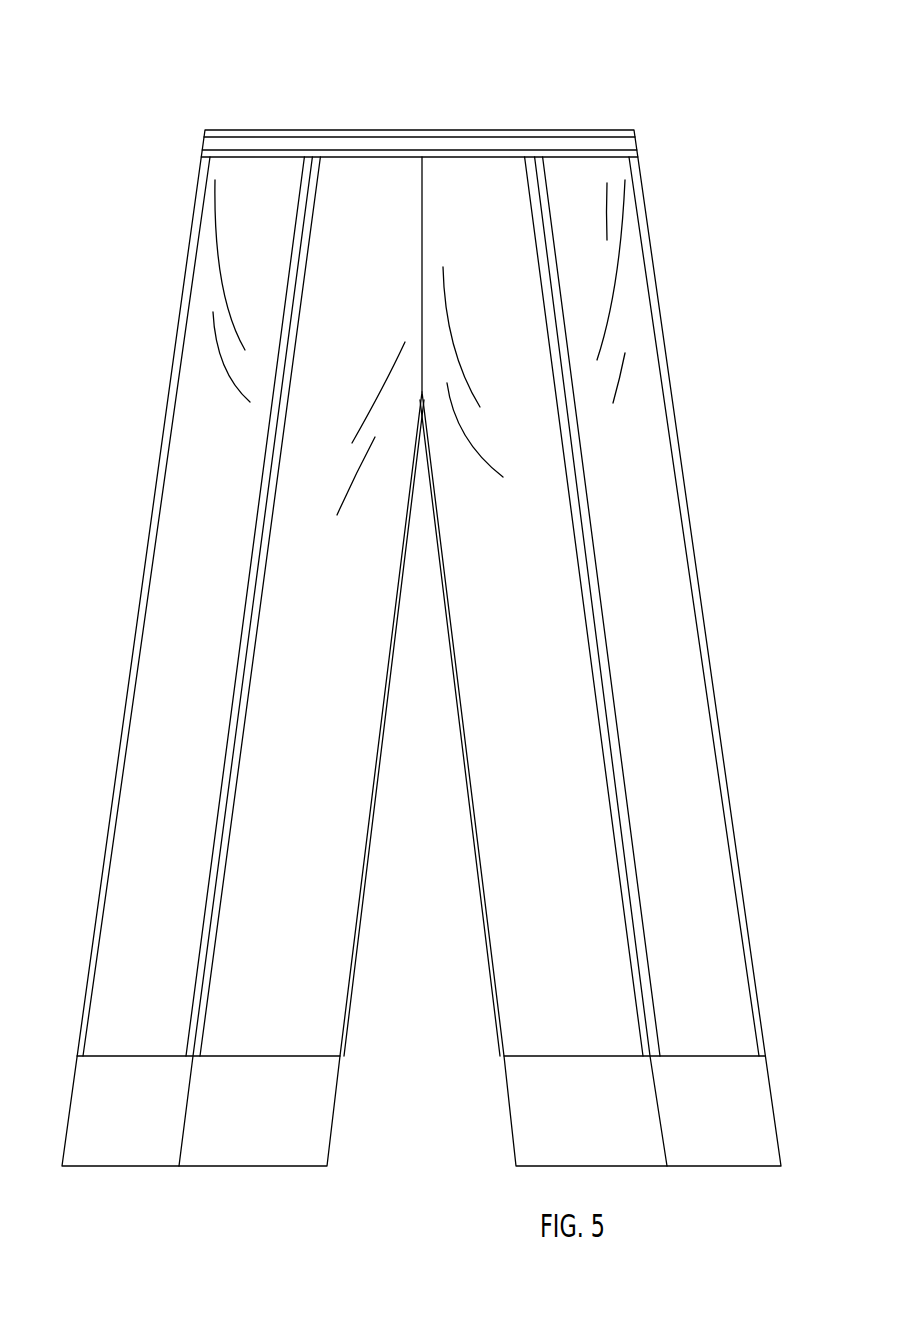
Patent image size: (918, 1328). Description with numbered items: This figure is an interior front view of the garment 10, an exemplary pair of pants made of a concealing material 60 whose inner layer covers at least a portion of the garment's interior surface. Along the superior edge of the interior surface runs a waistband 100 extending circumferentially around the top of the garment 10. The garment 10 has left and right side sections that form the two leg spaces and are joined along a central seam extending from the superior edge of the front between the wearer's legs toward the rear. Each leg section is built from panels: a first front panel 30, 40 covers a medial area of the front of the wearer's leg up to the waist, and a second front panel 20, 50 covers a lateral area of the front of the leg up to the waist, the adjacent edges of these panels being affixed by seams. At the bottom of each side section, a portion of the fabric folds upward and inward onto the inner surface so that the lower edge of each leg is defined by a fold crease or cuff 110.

The garment 10 is at (138, 106).
The waistband 100 is at (613, 145).
The second front panel 20 is at (135, 812).
The first front panel 30 is at (336, 917).
The first front panel 40 is at (492, 790).
The second front panel 50 is at (715, 877).
The concealing material 60 is at (650, 578).
The cuff 110 is at (527, 1111).